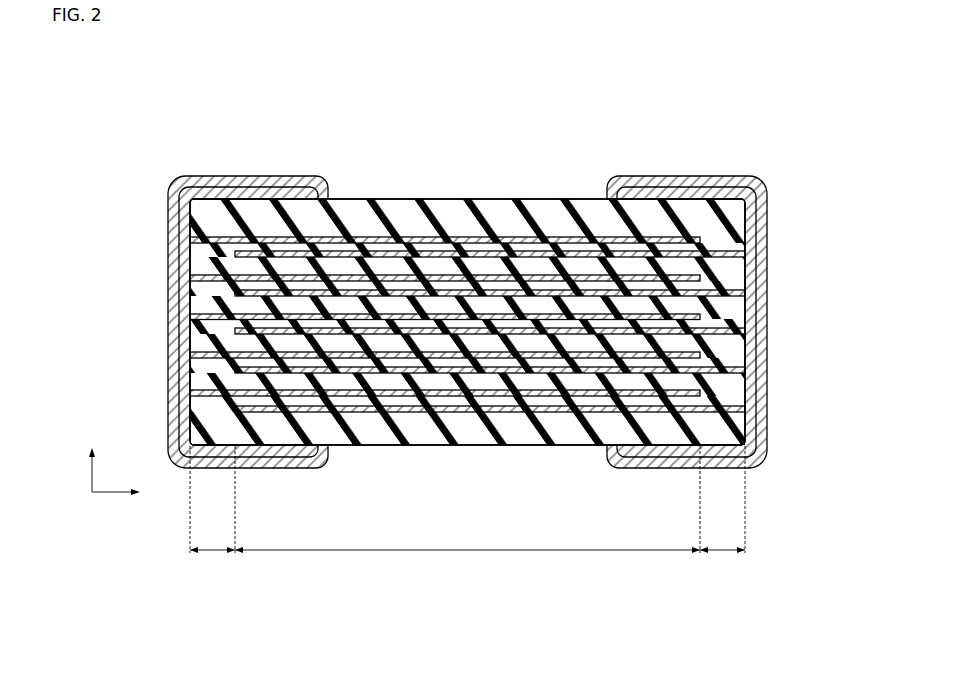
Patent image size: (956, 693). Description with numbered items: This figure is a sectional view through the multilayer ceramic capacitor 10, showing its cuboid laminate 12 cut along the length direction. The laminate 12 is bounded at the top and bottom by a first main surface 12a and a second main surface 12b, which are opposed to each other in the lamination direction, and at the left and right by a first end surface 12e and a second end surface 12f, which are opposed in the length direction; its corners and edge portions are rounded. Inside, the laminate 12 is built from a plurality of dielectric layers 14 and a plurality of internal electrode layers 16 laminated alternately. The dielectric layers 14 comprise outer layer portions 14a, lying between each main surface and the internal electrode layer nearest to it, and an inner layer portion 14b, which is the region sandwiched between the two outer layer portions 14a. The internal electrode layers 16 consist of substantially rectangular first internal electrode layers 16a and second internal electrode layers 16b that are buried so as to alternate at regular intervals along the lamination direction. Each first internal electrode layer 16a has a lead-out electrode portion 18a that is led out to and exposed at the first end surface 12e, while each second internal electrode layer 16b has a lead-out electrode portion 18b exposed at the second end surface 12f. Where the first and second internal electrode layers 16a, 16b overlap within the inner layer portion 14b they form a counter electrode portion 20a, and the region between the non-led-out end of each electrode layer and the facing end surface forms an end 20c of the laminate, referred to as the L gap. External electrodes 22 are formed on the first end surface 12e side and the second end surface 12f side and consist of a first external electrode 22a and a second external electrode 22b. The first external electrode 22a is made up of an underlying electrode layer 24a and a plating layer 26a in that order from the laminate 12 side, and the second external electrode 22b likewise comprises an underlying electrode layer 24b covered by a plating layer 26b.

The multilayer ceramic capacitor 10 is at (358, 101).
The laminate 12 is at (468, 357).
The first main surface 12a is at (385, 198).
The second main surface 12b is at (385, 446).
The first end surface 12e is at (189, 293).
The second end surface 12f is at (748, 224).
The dielectric layer 14 is at (467, 304).
The outer layer portion 14a is at (541, 222).
The inner layer portion 14b is at (603, 330).
The internal electrode layer 16 is at (534, 394).
The first internal electrode layer 16a is at (362, 330).
The second internal electrode layer 16b is at (466, 330).
The lead-out electrode portion 18a is at (189, 276).
The lead-out electrode portion 18b is at (746, 331).
The counter electrode portion 20a is at (467, 499).
The end of the laminate 20c is at (467, 499).
The external electrode 22 is at (510, 356).
The first external electrode 22a is at (248, 270).
The second external electrode 22b is at (688, 271).
The underlying electrode layer 24a is at (180, 120).
The underlying electrode layer 24b is at (770, 120).
The plating layer 26a is at (216, 180).
The plating layer 26b is at (722, 180).